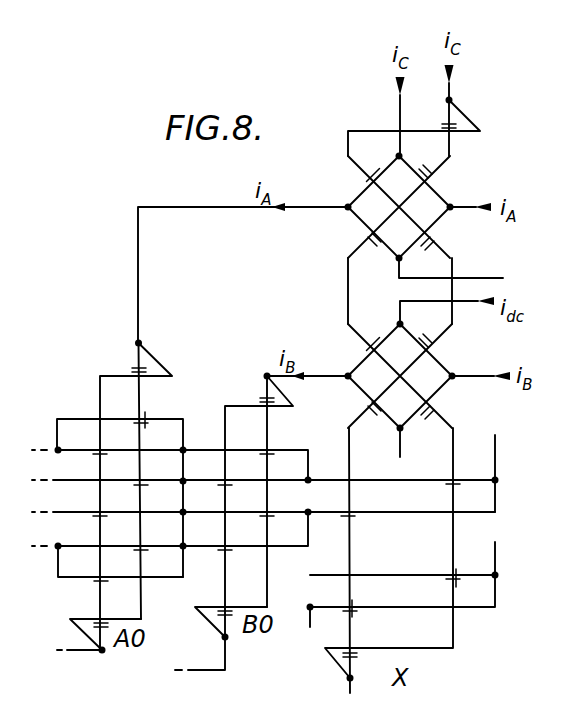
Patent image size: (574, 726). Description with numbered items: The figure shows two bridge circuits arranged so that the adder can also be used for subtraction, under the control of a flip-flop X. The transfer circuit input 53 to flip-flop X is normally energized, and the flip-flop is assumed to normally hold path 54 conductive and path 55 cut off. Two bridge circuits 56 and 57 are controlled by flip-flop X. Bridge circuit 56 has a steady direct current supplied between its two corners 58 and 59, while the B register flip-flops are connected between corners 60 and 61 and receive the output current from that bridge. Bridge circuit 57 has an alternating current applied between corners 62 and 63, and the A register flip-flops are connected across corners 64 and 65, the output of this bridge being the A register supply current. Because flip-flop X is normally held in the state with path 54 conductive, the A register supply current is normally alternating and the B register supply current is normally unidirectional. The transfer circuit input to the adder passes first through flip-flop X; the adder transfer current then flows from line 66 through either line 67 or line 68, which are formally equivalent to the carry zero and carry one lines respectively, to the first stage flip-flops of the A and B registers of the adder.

The transfer circuit input 53 is at (497, 561).
The path 54 is at (456, 634).
The path 55 is at (453, 320).
The bridge circuit 56 is at (436, 386).
The bridge circuit 57 is at (432, 217).
The corner 58 is at (396, 323).
The corner 59 is at (397, 429).
The corner 60 is at (347, 374).
The corner 61 is at (452, 374).
The corner 62 is at (397, 155).
The corner 63 is at (398, 259).
The corner 64 is at (348, 205).
The corner 65 is at (452, 205).
The line 66 is at (497, 462).
The line 67 is at (322, 478).
The line 68 is at (333, 517).